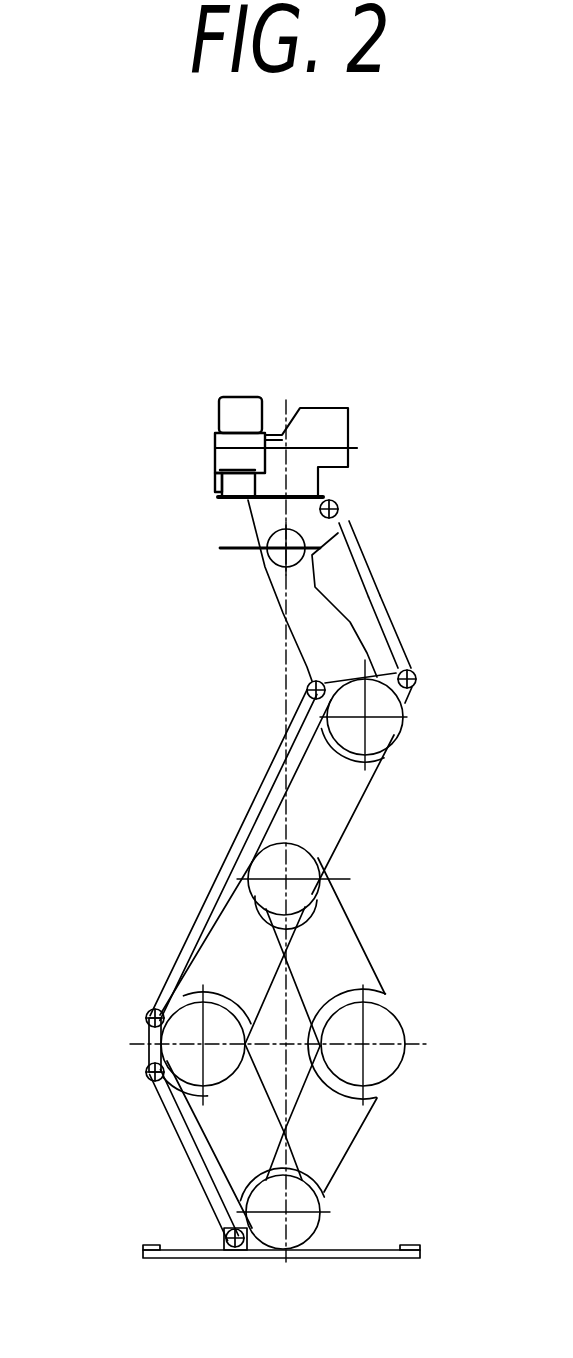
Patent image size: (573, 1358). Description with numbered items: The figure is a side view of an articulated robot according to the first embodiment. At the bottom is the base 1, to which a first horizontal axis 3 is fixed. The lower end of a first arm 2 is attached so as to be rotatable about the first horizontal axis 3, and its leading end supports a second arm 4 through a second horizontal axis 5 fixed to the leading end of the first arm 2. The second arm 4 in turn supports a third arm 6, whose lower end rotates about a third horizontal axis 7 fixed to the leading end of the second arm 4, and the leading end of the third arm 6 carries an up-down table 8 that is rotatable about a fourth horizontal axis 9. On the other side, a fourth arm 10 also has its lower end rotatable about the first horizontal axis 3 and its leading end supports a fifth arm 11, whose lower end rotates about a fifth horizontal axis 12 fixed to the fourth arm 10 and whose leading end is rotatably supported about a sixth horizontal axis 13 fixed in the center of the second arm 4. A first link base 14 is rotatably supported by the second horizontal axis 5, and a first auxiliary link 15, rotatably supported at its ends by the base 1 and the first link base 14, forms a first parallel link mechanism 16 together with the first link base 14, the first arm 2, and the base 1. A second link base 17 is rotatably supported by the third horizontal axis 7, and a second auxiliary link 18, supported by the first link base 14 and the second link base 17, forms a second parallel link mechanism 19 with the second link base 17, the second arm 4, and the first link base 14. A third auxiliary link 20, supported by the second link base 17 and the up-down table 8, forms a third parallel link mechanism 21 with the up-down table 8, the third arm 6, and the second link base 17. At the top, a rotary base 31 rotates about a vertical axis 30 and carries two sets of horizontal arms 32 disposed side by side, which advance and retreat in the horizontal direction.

The base 1 is at (338, 1232).
The first arm 2 is at (237, 1138).
The first horizontal axis 3 is at (282, 1214).
The second arm 4 is at (347, 782).
The second horizontal axis 5 is at (150, 1008).
The third arm 6 is at (303, 615).
The third horizontal axis 7 is at (302, 710).
The up-down table 8 is at (247, 508).
The fourth horizontal axis 9 is at (220, 549).
The fourth arm 10 is at (343, 1135).
The fifth arm 11 is at (347, 969).
The fifth horizontal axis 12 is at (364, 1048).
The sixth horizontal axis 13 is at (285, 879).
The first link base 14 is at (147, 1037).
The first auxiliary link 15 is at (200, 1197).
The first parallel link mechanism 16 is at (153, 1098).
The second link base 17 is at (412, 691).
The second auxiliary link 18 is at (217, 883).
The second parallel link mechanism 19 is at (250, 825).
The third auxiliary link 20 is at (398, 643).
The third parallel link mechanism 21 is at (375, 580).
The vertical axis 30 is at (300, 392).
The rotary base 31 is at (327, 462).
The horizontal arms 32 is at (235, 417).